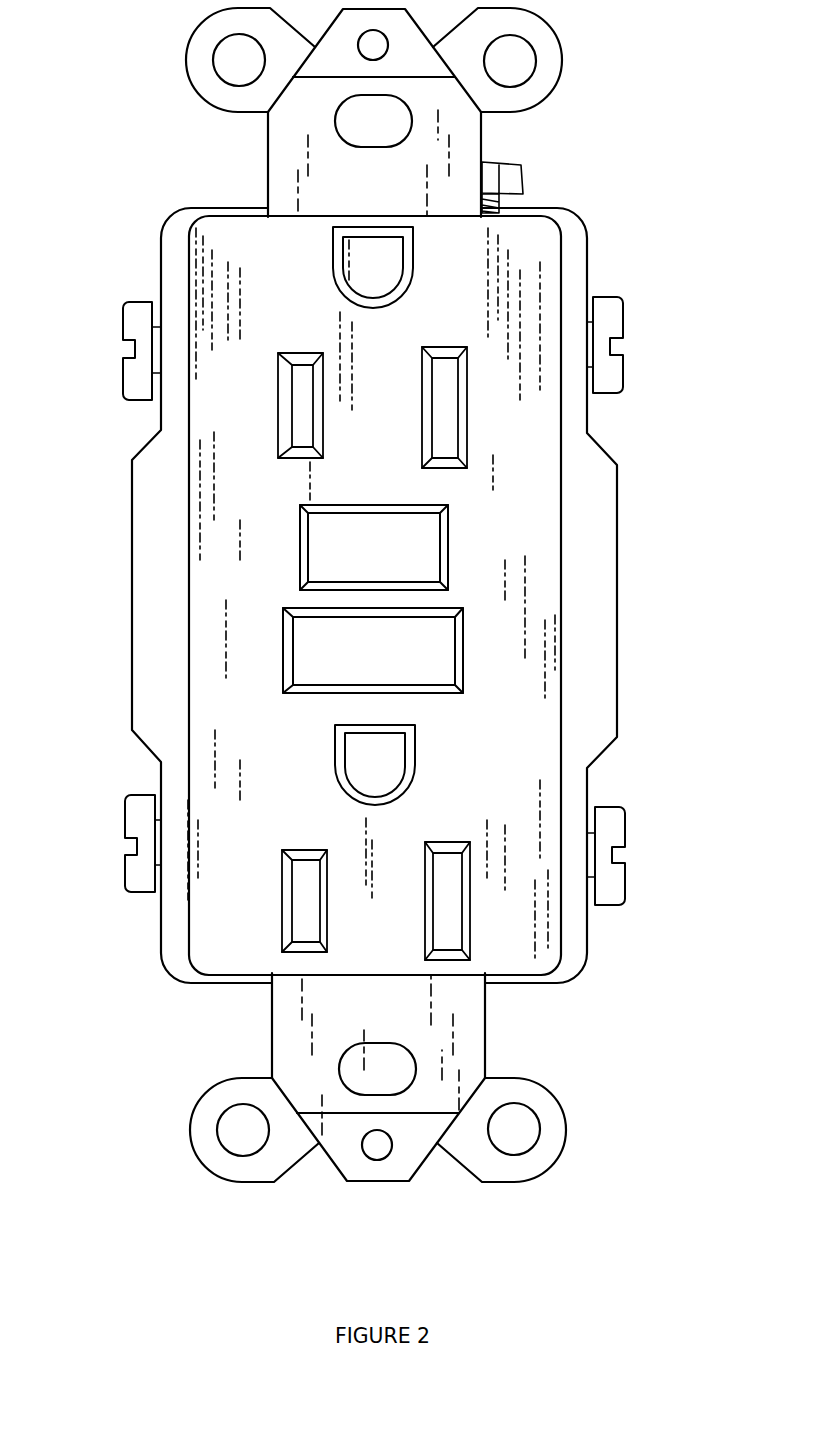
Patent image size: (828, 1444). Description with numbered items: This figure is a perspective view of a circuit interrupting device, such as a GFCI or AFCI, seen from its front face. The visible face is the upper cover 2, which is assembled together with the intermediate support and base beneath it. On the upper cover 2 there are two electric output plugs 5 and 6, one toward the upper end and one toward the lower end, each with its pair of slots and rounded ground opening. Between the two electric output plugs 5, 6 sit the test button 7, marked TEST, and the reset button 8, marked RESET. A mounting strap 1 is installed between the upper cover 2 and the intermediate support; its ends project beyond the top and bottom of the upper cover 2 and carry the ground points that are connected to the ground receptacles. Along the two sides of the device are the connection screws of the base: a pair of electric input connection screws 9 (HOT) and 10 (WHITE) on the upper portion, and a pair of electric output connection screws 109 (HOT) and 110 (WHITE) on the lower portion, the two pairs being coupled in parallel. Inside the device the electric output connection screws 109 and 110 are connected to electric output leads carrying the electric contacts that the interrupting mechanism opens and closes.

The mounting strap 1 is at (507, 30).
The upper cover 2 is at (547, 248).
The electric output plug 5 is at (387, 272).
The electric output plug 6 is at (358, 763).
The test button 7 is at (323, 558).
The reset button 8 is at (305, 662).
The electric input connection screw 9 is at (133, 377).
The electric input connection screw 10 is at (613, 367).
The electric output connection screw 109 is at (133, 875).
The electric output connection screw 110 is at (607, 877).